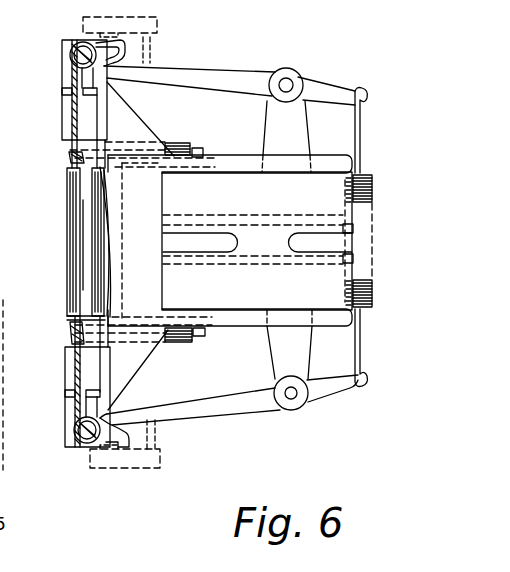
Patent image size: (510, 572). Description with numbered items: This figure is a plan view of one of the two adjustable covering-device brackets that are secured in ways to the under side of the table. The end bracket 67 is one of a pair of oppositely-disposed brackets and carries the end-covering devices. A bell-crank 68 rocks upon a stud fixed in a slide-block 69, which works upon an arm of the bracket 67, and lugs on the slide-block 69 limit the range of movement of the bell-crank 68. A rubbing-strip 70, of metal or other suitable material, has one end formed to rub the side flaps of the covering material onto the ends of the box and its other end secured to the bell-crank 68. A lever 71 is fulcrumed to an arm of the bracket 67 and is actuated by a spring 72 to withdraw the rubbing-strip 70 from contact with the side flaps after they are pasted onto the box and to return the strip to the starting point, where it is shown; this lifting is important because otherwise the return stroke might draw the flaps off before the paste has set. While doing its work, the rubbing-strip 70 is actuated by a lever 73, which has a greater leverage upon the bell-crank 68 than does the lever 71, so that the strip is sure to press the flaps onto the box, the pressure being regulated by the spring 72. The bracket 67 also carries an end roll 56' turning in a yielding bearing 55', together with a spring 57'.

The yielding bearings 55' is at (64, 236).
The end rolls 56' is at (114, 244).
The springs 57' is at (126, 242).
The end brackets 67 is at (237, 240).
The bell-cranks 68 is at (122, 44).
The slide-blocks 69 is at (62, 58).
The rubbing-strips 70 is at (72, 157).
The levers 71 is at (237, 89).
The springs 72 is at (370, 206).
The levers 73 is at (158, 24).